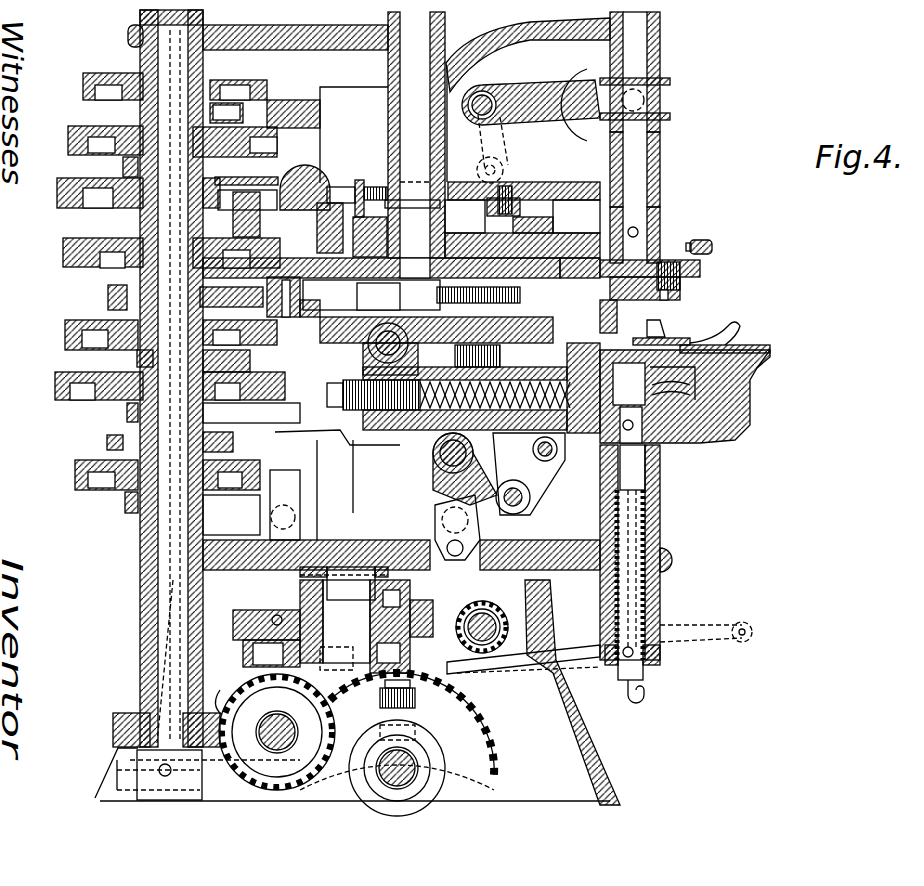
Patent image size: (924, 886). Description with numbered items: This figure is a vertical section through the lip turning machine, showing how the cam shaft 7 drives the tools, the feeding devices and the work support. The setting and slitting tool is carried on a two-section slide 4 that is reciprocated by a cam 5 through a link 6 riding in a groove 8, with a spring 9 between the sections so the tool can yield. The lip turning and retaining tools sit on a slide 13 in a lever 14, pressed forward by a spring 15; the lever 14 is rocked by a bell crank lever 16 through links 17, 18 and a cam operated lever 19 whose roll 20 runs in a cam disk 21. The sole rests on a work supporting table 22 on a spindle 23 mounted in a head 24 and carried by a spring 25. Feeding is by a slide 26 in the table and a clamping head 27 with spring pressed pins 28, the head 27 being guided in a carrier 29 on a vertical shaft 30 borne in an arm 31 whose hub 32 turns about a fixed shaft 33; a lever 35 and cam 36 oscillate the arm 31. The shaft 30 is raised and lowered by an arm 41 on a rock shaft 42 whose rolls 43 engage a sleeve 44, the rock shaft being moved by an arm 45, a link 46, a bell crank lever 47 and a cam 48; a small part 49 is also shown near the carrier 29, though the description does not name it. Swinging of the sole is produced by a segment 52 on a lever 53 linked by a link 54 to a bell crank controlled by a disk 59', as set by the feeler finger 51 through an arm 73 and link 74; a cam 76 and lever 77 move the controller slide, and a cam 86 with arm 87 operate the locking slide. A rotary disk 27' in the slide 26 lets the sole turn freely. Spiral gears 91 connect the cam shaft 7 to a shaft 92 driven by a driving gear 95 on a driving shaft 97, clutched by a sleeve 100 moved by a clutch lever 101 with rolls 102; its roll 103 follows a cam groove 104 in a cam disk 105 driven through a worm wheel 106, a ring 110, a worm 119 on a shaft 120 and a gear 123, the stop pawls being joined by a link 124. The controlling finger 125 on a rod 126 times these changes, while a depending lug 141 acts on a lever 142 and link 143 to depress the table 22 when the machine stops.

The slide 4 is at (420, 298).
The cam 5 is at (63, 251).
The link 6 is at (108, 291).
The cam shaft 7 is at (158, 571).
The groove 8 is at (110, 262).
The spring 9 is at (520, 297).
The slide 13 is at (573, 413).
The lever 14 is at (570, 432).
The spring 15 is at (750, 420).
The bell crank lever 16 is at (545, 472).
The link 17 is at (540, 483).
The link 18 is at (385, 515).
The cam operated lever 19 is at (236, 506).
The roll 20 is at (121, 497).
The cam disk 21 is at (75, 476).
The work supporting table 22 is at (756, 344).
The spindle 23 is at (632, 468).
The head 24 is at (680, 563).
The spring 25 is at (662, 530).
The slide 26 is at (745, 358).
The clamping head 27 is at (683, 281).
The rotary disk 27' is at (805, 350).
The spring pressed pins 28 is at (683, 317).
The carrier 29 is at (660, 255).
The shaft 30 is at (640, 178).
The arm 31 is at (662, 48).
The hub 32 is at (450, 87).
The fixed shaft 33 is at (410, 112).
The lever 35 is at (285, 100).
The cam 36 is at (95, 73).
The arm 41 is at (540, 80).
The rock shaft 42 is at (512, 127).
The rolls 43 is at (655, 97).
The sleeve 44 is at (662, 117).
The arm 45 is at (505, 170).
The link 46 is at (345, 190).
The bell crank lever 47 is at (318, 172).
The cam 48 is at (68, 134).
The screw 49 is at (712, 242).
The feeler finger 51 is at (733, 385).
The segment 52 is at (561, 240).
The lever 53 is at (453, 238).
The link 54 is at (315, 208).
The disk 59' is at (93, 202).
The arm 73 is at (322, 445).
The link 74 is at (107, 442).
The cam 76 is at (65, 330).
The lever 77 is at (137, 361).
The cam 86 is at (55, 385).
The arm 87 is at (127, 415).
The spiral gears 91 is at (218, 712).
The shaft 92 is at (270, 725).
The driving gear 95 is at (497, 770).
The driving shaft 97 is at (417, 768).
The sleeve 100 is at (430, 747).
The clutch lever 101 is at (205, 764).
The rolls 102 is at (443, 728).
The roll 103 is at (341, 650).
The cam groove 104 is at (235, 663).
The cam disk 105 is at (505, 645).
The worm wheel 106 is at (262, 612).
The ring 110 is at (172, 579).
The worm 119 is at (507, 627).
The shaft 120 is at (545, 588).
The gear 123 is at (498, 762).
The link 124 is at (388, 573).
The controlling finger 125 is at (738, 332).
The rod 126 is at (670, 296).
The depending lug 141 is at (638, 675).
The lever 142 is at (601, 696).
The link 143 is at (663, 487).